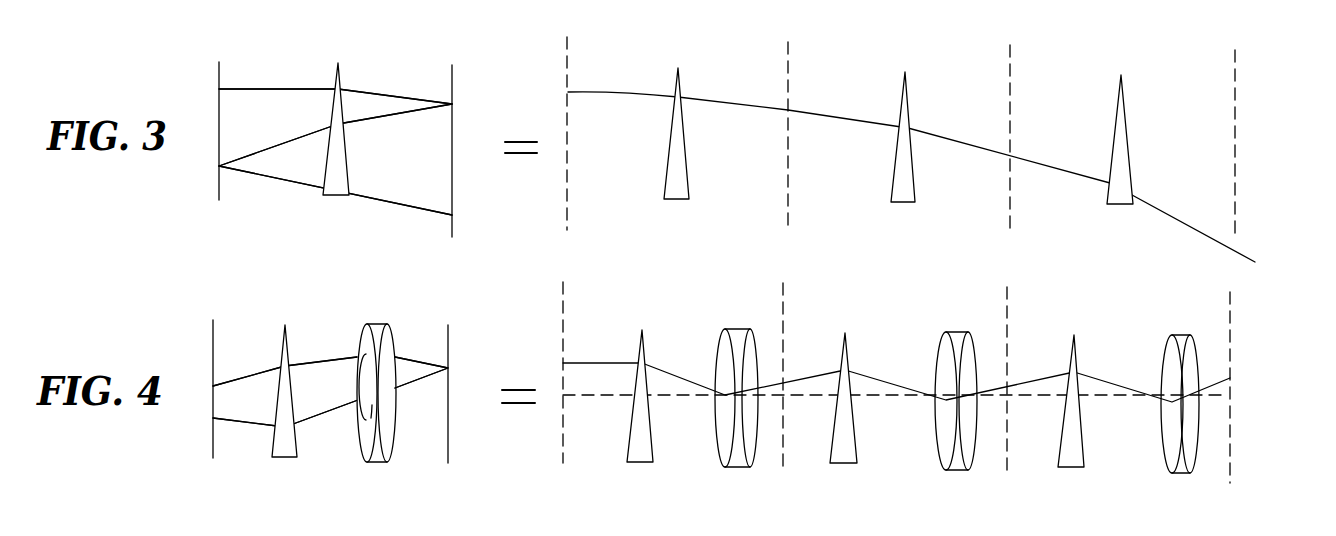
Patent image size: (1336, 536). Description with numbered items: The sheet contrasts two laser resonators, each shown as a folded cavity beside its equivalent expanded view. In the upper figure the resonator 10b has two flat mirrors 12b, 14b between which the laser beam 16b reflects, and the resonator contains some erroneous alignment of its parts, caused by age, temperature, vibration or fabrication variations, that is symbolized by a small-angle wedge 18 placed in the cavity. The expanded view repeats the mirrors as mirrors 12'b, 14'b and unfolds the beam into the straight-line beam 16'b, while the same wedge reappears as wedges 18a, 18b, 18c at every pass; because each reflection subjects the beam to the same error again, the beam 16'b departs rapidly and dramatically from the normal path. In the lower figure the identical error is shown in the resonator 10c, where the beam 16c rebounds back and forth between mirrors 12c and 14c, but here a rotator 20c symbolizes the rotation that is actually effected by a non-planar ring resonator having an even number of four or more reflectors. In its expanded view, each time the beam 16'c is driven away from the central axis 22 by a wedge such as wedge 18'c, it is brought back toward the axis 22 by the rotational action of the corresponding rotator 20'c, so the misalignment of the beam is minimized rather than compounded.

In FIG. 3, the resonator 10b is at (344, 40).
In FIG. 3, the mirror 12b is at (219, 78).
In FIG. 3, the mirror 14b is at (455, 88).
In FIG. 3, the laser beam 16b is at (380, 117).
In FIG. 3, the wedge 18 is at (308, 129).
In FIG. 3, the mirror 12'b is at (609, 132).
In FIG. 3, the mirror 14'b is at (827, 134).
In FIG. 3, the laser beam 16'b is at (911, 177).
In FIG. 3, the wedge 18a is at (670, 150).
In FIG. 3, the wedge 18b is at (915, 160).
In FIG. 3, the wedge 18c is at (1128, 153).
In FIG. 4, the wedge 18c is at (293, 360).
In FIG. 4, the resonator 10c is at (399, 309).
In FIG. 4, the mirror 12c is at (213, 365).
In FIG. 4, the mirror 14c is at (450, 357).
In FIG. 4, the laser beam 16c is at (257, 372).
In FIG. 4, the rotator 20c is at (383, 450).
In FIG. 4, the laser beam 16'c is at (896, 352).
In FIG. 4, the wedge 18'c is at (667, 383).
In FIG. 4, the rotator 20'c is at (776, 386).
In FIG. 4, the central axis 22 is at (672, 385).